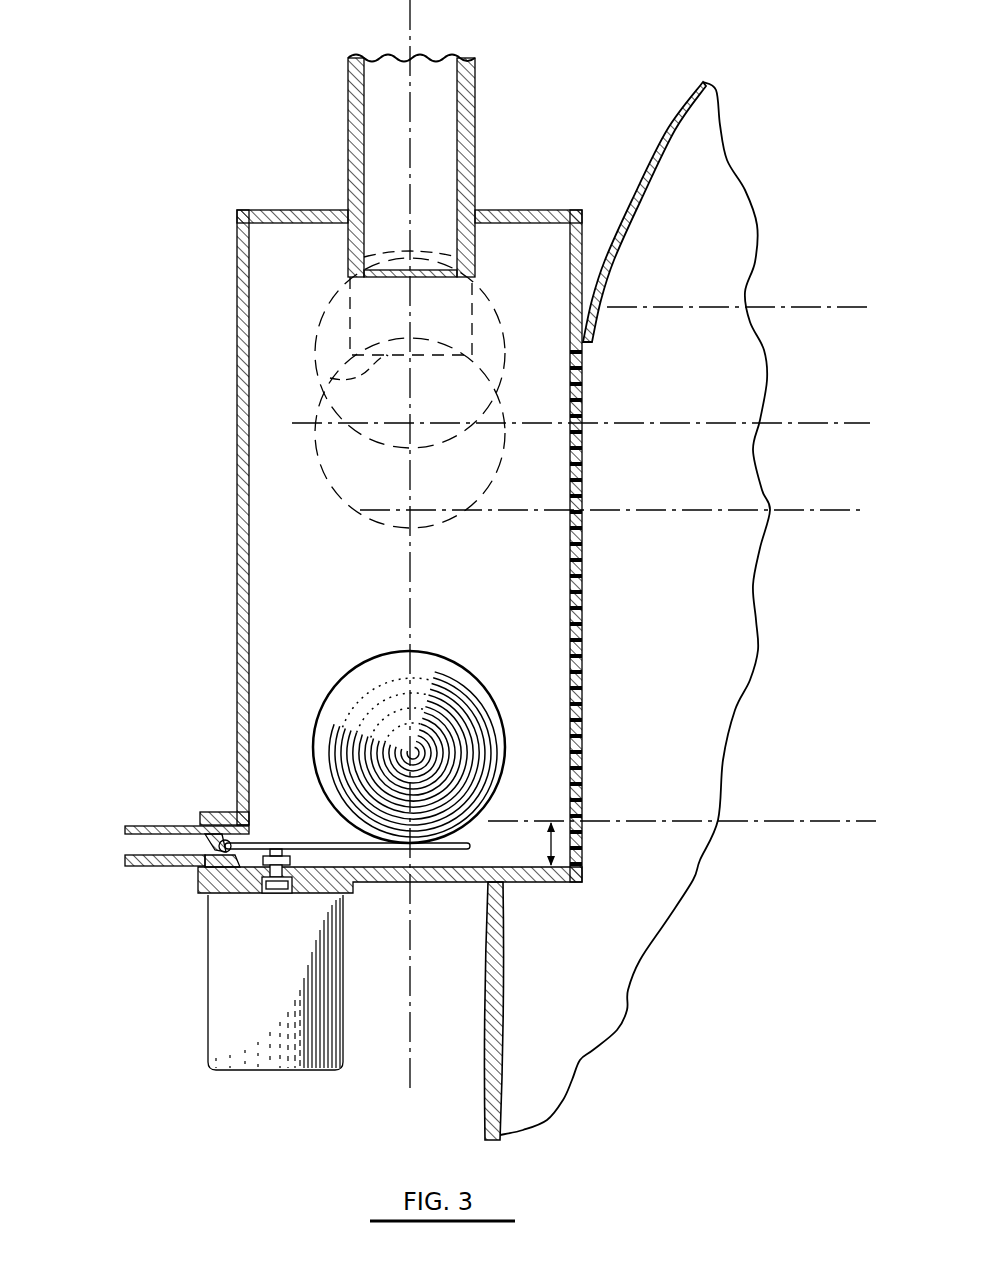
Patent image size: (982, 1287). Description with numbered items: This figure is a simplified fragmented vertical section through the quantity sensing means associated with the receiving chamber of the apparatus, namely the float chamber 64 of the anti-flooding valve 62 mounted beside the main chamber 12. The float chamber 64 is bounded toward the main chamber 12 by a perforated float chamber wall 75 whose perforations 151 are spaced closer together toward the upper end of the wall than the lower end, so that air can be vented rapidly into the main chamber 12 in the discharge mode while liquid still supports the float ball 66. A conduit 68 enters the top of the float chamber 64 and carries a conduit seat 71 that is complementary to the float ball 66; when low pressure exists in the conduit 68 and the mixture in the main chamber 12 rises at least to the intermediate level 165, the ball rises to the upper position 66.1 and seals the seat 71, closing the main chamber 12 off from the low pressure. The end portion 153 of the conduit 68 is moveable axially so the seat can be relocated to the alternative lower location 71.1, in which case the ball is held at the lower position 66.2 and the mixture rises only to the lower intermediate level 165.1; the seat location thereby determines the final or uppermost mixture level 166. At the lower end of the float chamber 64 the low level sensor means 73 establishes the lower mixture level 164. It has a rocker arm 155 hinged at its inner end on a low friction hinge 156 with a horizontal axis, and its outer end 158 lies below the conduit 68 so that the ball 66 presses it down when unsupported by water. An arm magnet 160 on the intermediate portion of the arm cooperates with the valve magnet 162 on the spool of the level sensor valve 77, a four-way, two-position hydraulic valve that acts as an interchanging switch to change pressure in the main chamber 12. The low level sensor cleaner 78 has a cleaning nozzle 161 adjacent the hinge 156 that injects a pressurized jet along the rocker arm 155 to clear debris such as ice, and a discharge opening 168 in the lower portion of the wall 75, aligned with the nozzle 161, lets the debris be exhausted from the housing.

The main chamber 12 is at (668, 157).
The anti-flooding valve 62 is at (408, 551).
The float chamber 64 is at (600, 406).
The float ball 66 is at (438, 683).
The upper position of ball 66.1 is at (500, 316).
The lower position of ball 66.2 is at (378, 526).
The conduit 68 is at (403, 165).
The conduit seat 71 is at (384, 284).
The alternative lower seat location 71.1 is at (330, 378).
The low level sensor means 73 is at (200, 758).
The float chamber wall 75 is at (583, 580).
The level sensor valve 77 is at (228, 975).
The low level sensor cleaner 78 is at (155, 840).
The perforations 151 is at (583, 455).
The end portion of conduit 153 is at (476, 187).
The rocker arm 155 is at (388, 855).
The low friction hinge 156 is at (223, 838).
The outer end of rocker arm 158 is at (470, 847).
The arm magnet 160 is at (282, 852).
The cleaning nozzle 161 is at (186, 870).
The valve magnet 162 is at (275, 895).
The lower mixture level 164 is at (762, 821).
The intermediate mixture level 165 is at (775, 423).
The lower intermediate level 165.1 is at (792, 508).
The uppermost mixture level 166 is at (770, 307).
The discharge opening 168 is at (588, 868).